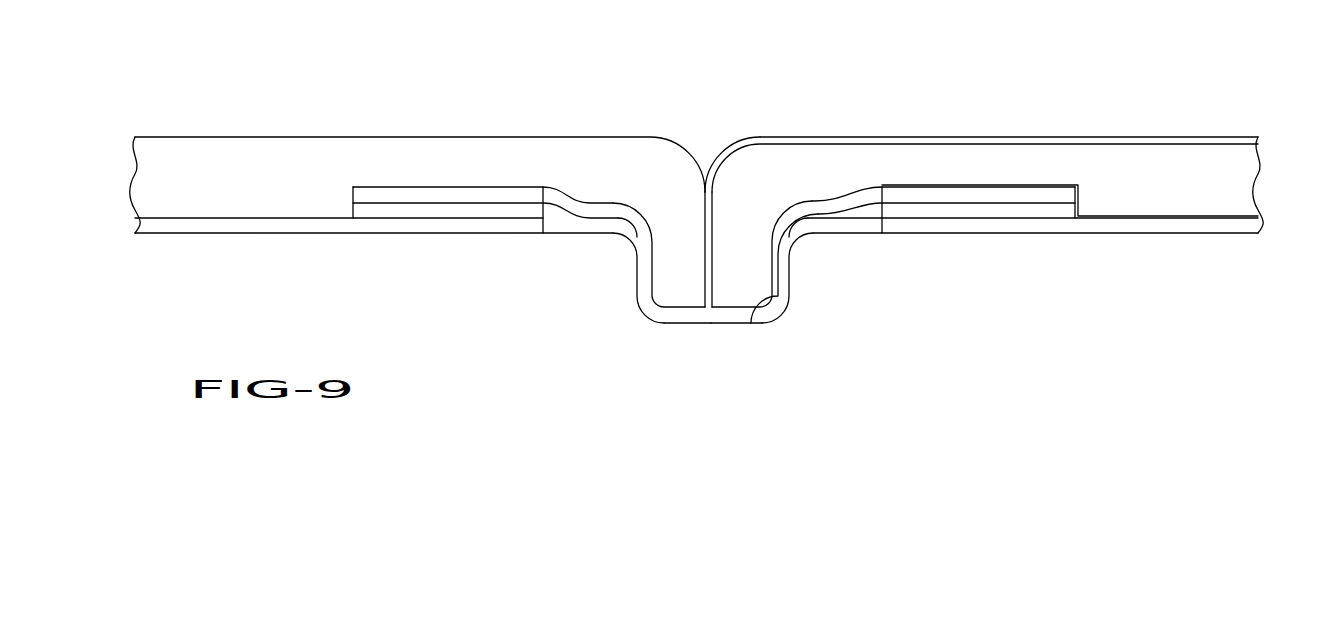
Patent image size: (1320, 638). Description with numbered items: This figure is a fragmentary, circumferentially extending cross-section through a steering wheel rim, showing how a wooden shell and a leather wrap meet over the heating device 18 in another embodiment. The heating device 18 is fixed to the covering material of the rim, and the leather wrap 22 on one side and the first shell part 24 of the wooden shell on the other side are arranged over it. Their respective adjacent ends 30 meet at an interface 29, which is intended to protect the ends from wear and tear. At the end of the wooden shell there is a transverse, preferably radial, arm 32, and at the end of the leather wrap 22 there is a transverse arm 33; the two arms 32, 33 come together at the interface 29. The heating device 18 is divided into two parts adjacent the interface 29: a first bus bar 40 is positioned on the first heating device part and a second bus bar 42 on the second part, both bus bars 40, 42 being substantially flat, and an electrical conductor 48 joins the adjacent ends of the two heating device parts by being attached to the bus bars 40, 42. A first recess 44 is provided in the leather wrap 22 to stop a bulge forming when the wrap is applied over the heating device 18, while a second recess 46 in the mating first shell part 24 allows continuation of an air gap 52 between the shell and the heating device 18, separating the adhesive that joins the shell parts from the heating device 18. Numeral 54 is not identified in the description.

The heating device 18 is at (254, 222).
The leather wrap 22 is at (262, 131).
The first shell part 24 is at (880, 128).
The interface 29 is at (700, 150).
The end 30 is at (770, 137).
The transverse arm 32 is at (750, 308).
The transverse arm 33 is at (677, 308).
The first bus bar 40 is at (476, 212).
The second bus bar 42 is at (951, 212).
The first recess 44 is at (432, 190).
The second recess 46 is at (992, 186).
The electrical conductor 48 is at (796, 318).
The air gap 52 is at (1188, 212).
The outer layer 54 is at (1128, 137).